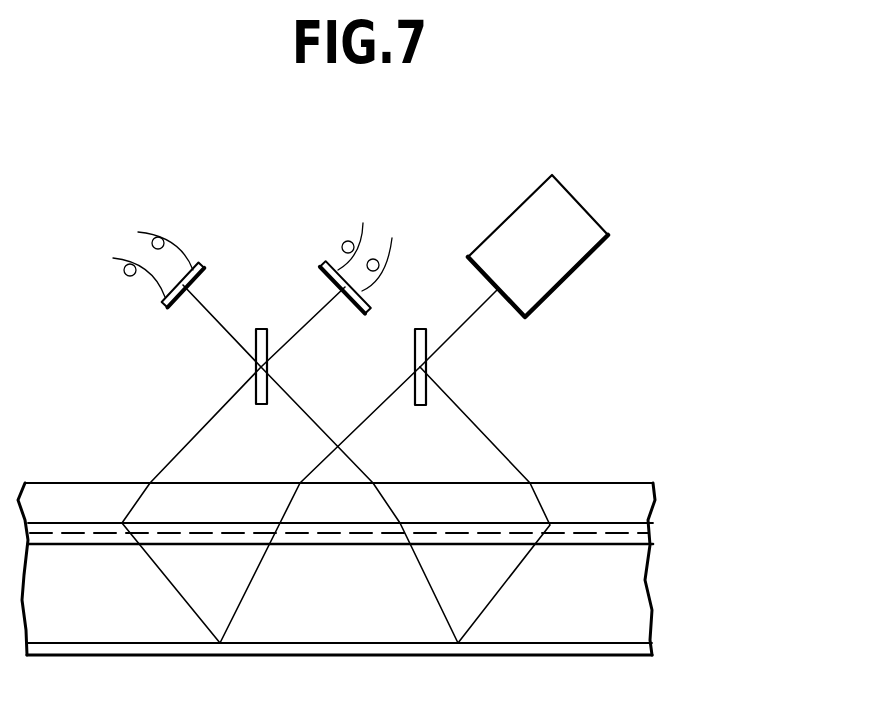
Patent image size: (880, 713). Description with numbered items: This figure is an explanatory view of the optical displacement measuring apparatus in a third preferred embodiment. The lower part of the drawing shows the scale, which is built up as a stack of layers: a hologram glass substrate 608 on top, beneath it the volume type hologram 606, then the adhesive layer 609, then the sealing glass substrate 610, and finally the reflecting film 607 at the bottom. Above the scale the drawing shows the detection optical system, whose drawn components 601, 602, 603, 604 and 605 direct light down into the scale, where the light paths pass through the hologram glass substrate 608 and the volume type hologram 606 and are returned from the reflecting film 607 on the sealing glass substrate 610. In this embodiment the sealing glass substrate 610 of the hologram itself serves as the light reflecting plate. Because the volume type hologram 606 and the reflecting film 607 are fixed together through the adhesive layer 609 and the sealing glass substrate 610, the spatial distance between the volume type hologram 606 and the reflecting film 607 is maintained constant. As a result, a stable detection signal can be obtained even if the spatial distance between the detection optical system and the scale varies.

The laser light source 601 is at (582, 205).
The beam splitter 602 is at (426, 367).
The beam splitter 603 is at (256, 367).
The mirror 604 is at (165, 305).
The mirror 605 is at (323, 262).
The volume type hologram 606 is at (655, 532).
The reflecting film 607 is at (640, 648).
The hologram glass substrate 608 is at (630, 497).
The adhesive layer 609 is at (653, 543).
The sealing glass substrate 610 is at (640, 613).